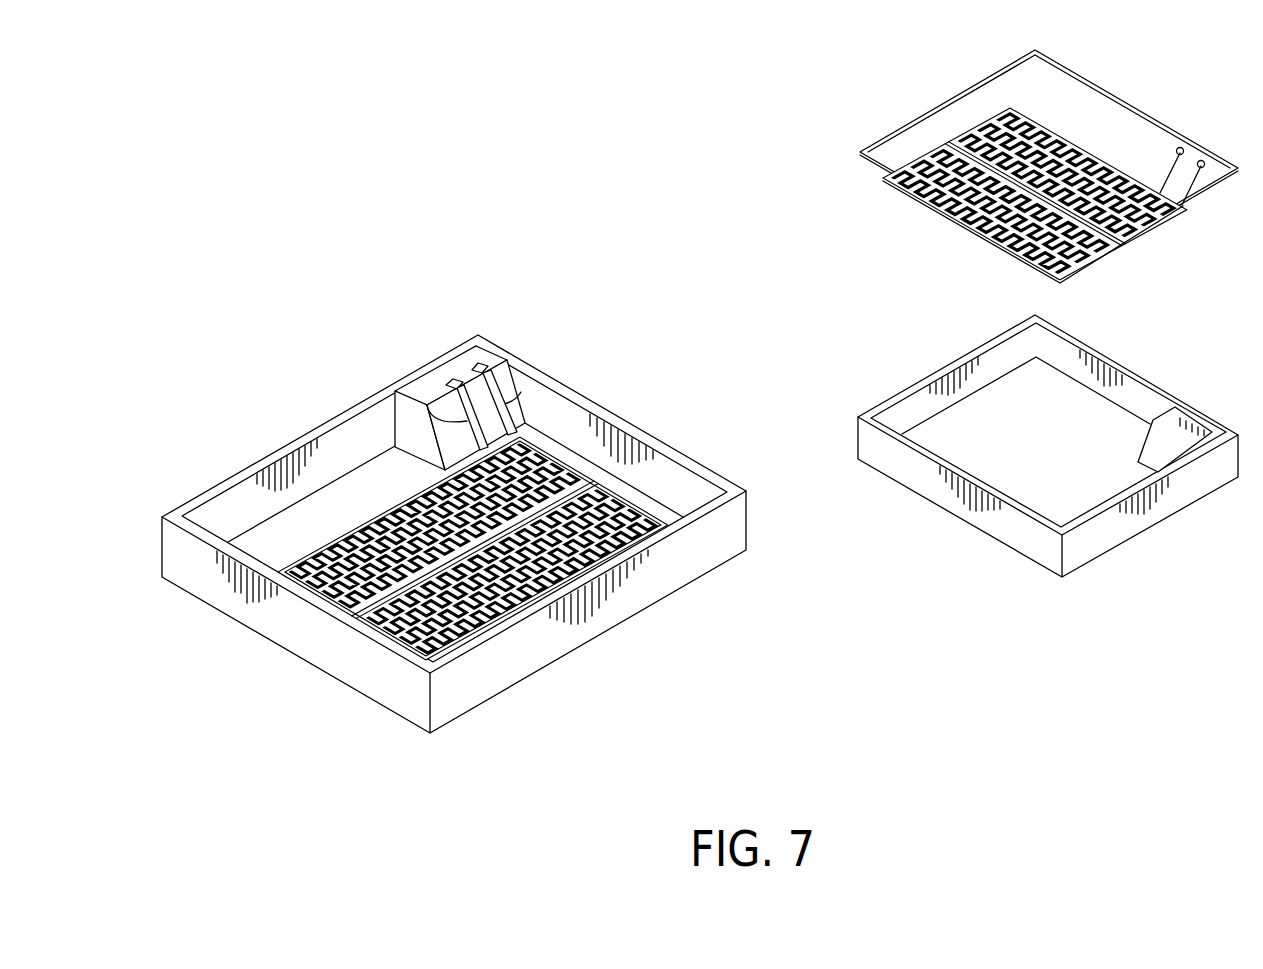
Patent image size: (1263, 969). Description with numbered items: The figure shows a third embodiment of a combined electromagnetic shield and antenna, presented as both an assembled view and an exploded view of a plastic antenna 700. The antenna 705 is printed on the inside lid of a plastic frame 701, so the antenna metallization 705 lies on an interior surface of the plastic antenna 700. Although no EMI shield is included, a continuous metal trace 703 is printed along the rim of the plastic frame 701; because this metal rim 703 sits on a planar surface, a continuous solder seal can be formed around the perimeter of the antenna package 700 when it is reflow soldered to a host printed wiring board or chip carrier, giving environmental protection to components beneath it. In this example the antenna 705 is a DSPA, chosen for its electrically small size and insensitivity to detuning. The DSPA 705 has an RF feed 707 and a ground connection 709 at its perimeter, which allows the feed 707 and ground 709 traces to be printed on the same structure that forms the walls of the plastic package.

The plastic antenna 700 is at (454, 534).
The plastic frame 701 is at (1113, 553).
The continuous metal trace 703 is at (1140, 113).
The antenna metallization 705 is at (1148, 230).
The RF feed 707 is at (522, 374).
The ground connection 709 is at (403, 397).